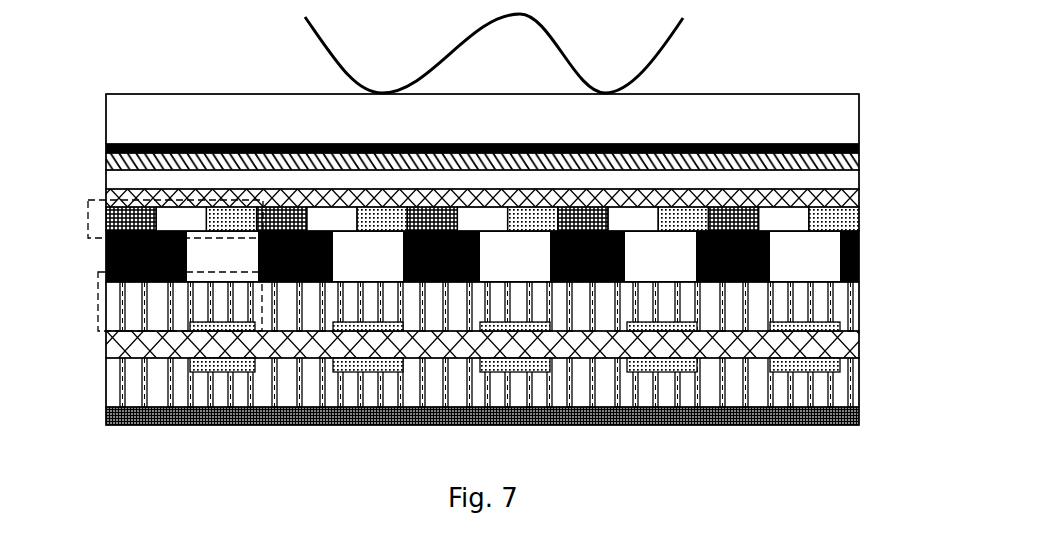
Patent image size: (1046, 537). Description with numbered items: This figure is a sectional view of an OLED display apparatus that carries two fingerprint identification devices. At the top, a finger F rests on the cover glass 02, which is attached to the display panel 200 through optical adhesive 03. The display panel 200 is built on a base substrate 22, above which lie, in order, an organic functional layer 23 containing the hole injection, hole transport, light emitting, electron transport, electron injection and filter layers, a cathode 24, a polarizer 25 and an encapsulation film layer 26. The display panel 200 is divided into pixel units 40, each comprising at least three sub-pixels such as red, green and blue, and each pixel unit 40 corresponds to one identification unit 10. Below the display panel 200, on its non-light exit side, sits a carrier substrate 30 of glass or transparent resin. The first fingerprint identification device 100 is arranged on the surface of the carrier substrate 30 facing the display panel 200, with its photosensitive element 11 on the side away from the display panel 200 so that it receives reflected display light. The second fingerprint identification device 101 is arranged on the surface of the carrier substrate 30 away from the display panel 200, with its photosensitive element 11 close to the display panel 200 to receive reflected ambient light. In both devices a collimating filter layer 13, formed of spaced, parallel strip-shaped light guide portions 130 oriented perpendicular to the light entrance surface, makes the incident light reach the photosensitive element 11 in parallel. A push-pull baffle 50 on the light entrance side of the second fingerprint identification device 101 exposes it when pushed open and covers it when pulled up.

The cover glass 02 is at (855, 121).
The optical adhesive 03 is at (859, 150).
The encapsulation film layer 26 is at (859, 168).
The polarizer 25 is at (855, 180).
The cathode 24 is at (859, 203).
The organic functional layer 23 is at (859, 226).
The base substrate 22 is at (859, 259).
The display panel 200 is at (907, 265).
The collimating filter layer 13 is at (855, 295).
The strip-shaped light guide portion 130 is at (848, 306).
The photosensitive element 11 is at (852, 326).
The first fingerprint identification device 100 is at (906, 295).
The second fingerprint identification device 101 is at (906, 353).
The identification unit 10 is at (98, 303).
The pixel unit 40 is at (100, 220).
The carrier substrate 30 is at (106, 346).
The push-pull baffle 50 is at (106, 411).
The finger F is at (667, 46).